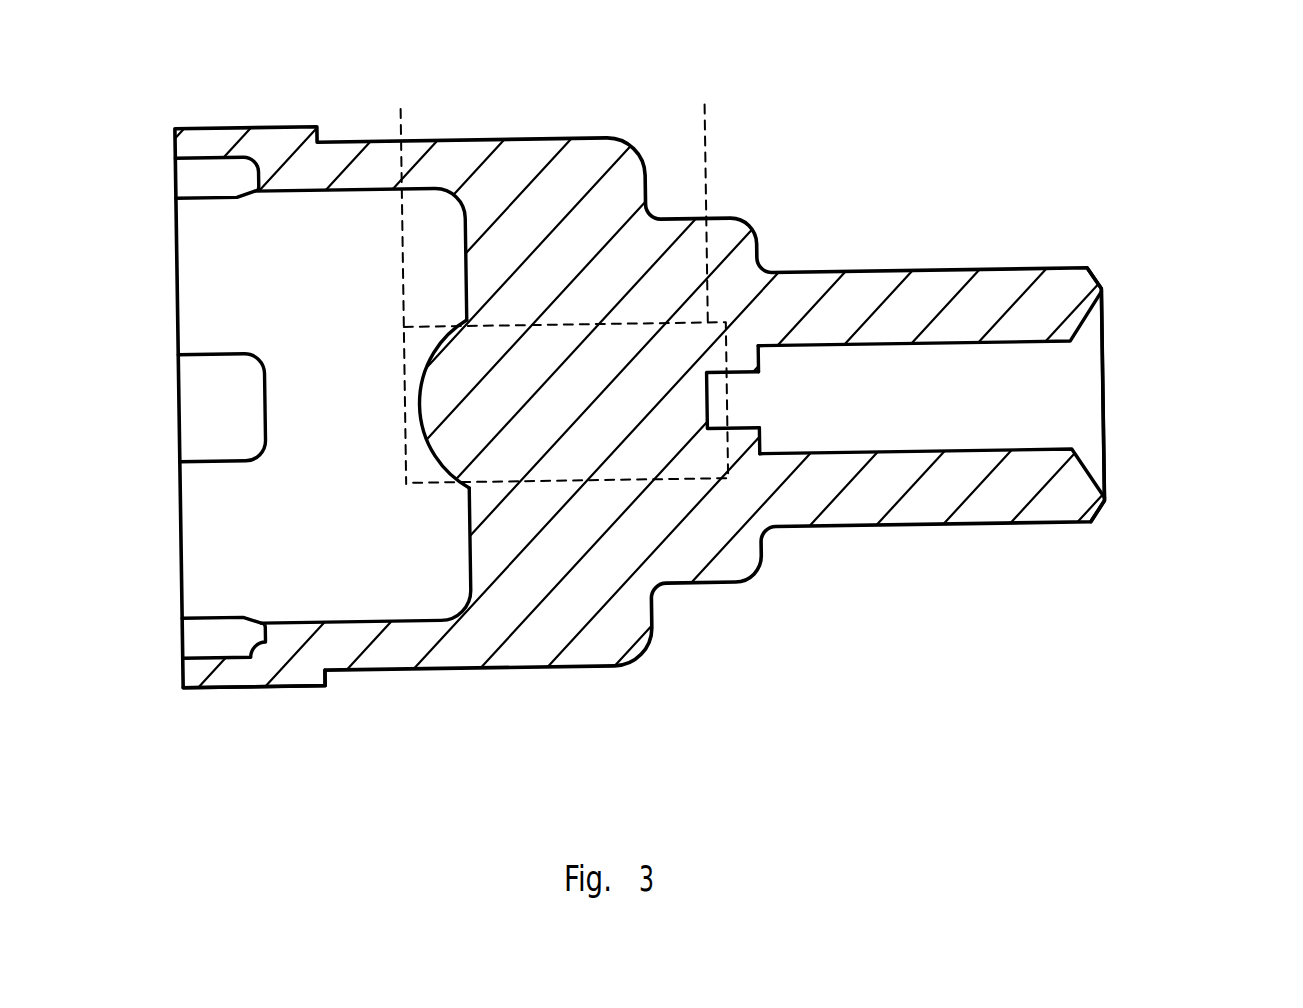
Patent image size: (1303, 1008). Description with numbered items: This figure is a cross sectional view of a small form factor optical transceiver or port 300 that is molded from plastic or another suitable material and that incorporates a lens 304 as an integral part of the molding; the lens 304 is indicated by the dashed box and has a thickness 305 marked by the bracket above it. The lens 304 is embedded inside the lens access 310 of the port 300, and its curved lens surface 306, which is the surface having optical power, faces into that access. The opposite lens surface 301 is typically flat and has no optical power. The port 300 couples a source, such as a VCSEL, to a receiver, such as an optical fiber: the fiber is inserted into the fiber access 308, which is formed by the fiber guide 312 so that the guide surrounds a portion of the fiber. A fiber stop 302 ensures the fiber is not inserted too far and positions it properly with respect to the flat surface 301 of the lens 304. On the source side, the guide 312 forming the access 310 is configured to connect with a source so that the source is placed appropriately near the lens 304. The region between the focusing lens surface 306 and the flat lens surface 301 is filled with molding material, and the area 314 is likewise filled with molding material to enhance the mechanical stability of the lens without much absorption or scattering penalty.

The port 300 is at (1120, 208).
The flat lens surface 301 is at (710, 403).
The fiber stop 302 is at (783, 350).
The lens 304 is at (533, 483).
The thickness 305 is at (706, 112).
The lens surface 306 is at (430, 350).
The fiber access 308 is at (1038, 392).
The lens access 310 is at (235, 504).
The fiber guide 312 is at (1077, 285).
The area 314 is at (628, 260).